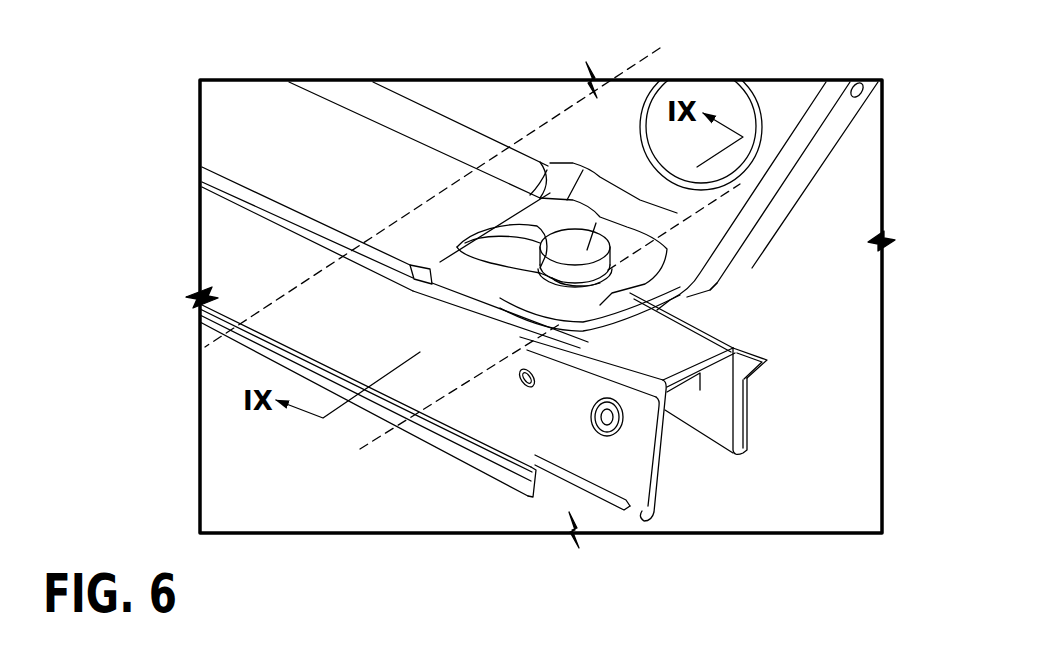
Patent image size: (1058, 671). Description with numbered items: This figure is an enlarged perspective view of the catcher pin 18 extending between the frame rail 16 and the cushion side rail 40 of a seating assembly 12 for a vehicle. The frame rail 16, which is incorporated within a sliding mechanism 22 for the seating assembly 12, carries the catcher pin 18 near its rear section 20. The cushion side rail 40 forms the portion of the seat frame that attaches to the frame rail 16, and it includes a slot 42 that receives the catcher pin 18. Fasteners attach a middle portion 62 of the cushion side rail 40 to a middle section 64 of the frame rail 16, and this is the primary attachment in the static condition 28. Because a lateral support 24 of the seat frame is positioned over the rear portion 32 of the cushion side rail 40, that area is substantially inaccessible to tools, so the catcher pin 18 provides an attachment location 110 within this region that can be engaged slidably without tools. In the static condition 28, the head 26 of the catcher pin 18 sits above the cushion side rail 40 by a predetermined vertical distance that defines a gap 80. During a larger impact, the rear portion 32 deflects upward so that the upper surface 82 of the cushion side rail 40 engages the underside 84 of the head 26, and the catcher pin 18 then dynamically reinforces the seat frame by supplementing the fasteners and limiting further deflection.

The seating assembly 12 is at (264, 442).
The frame rail 16 is at (254, 357).
The catcher pin 18 is at (596, 223).
The rear section 20 is at (630, 470).
The sliding mechanism 22 is at (706, 409).
The lateral support 24 is at (661, 46).
The head 26 is at (700, 208).
The static condition 28 is at (444, 496).
The rear portion 32 is at (568, 278).
The cushion side rail 40 is at (858, 129).
The slot 42 is at (490, 228).
The middle portion 62 is at (299, 115).
The middle section 64 is at (300, 248).
The gap 80 is at (608, 277).
The upper surface 82 is at (497, 273).
The underside 84 is at (565, 290).
The attachment location 110 is at (706, 309).